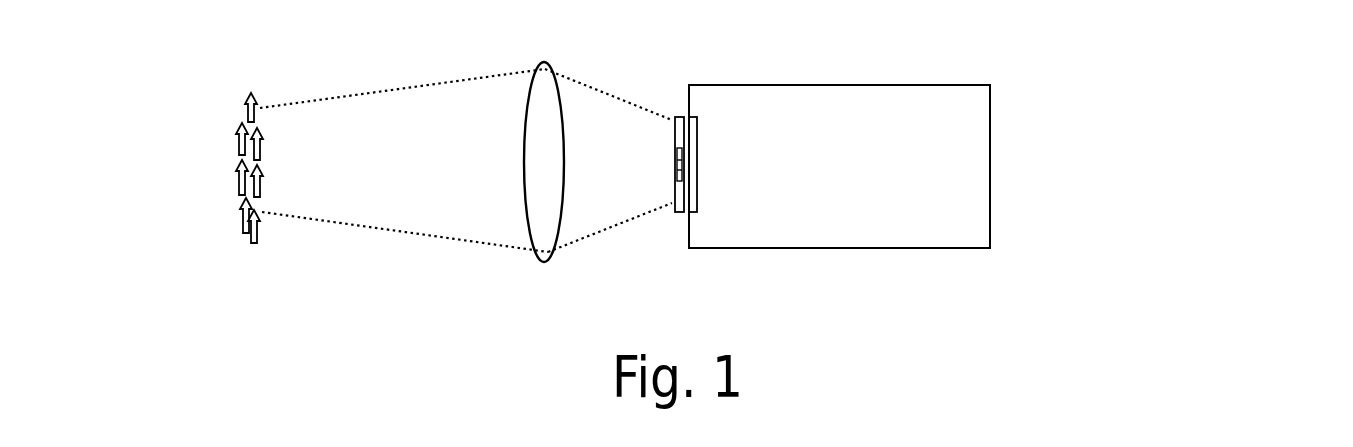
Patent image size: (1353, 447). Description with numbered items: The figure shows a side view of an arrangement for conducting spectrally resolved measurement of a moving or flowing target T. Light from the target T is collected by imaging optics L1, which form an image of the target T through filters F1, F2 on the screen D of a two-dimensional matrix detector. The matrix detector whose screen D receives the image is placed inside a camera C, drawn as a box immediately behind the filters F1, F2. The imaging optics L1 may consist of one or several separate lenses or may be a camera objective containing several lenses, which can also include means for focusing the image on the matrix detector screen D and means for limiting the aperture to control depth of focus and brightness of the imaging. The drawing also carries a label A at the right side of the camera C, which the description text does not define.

The target T is at (225, 172).
The imaging optics L1 is at (520, 220).
The filter F1 is at (626, 214).
The filter F2 is at (670, 190).
The screen of two-dimensional matrix detector D is at (700, 193).
The camera C is at (839, 166).
The analysis unit A is at (1065, 172).